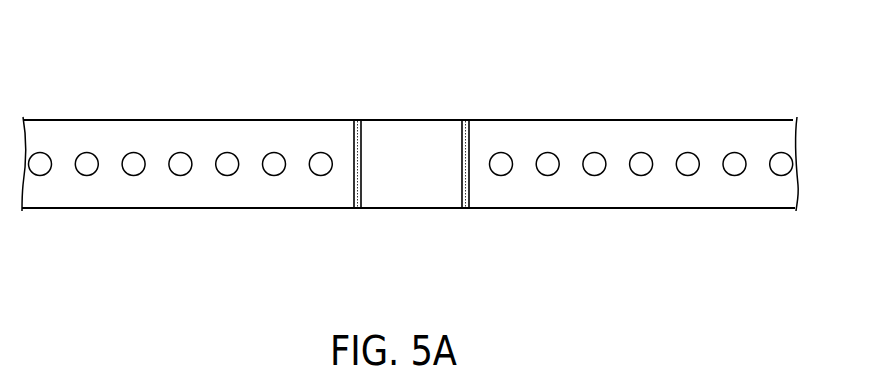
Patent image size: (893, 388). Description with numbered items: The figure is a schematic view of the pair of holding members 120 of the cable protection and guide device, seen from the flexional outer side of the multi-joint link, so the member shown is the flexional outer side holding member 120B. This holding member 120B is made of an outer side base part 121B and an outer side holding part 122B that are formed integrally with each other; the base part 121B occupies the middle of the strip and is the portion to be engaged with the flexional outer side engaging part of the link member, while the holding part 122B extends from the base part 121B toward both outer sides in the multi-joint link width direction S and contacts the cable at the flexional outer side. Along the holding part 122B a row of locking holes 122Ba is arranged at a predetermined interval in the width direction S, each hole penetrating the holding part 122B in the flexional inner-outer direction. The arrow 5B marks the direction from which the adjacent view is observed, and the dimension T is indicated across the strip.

The pair of holding members 120 is at (410, 105).
The flexional outer side holding member 120B is at (351, 122).
The outer side base part 121B is at (411, 142).
The outer side holding part 122B is at (258, 133).
The locking holes 122Ba is at (78, 162).
The arrow 5B is at (411, 238).
The multi-joint link width direction S is at (758, 290).
The thickness T is at (778, 220).